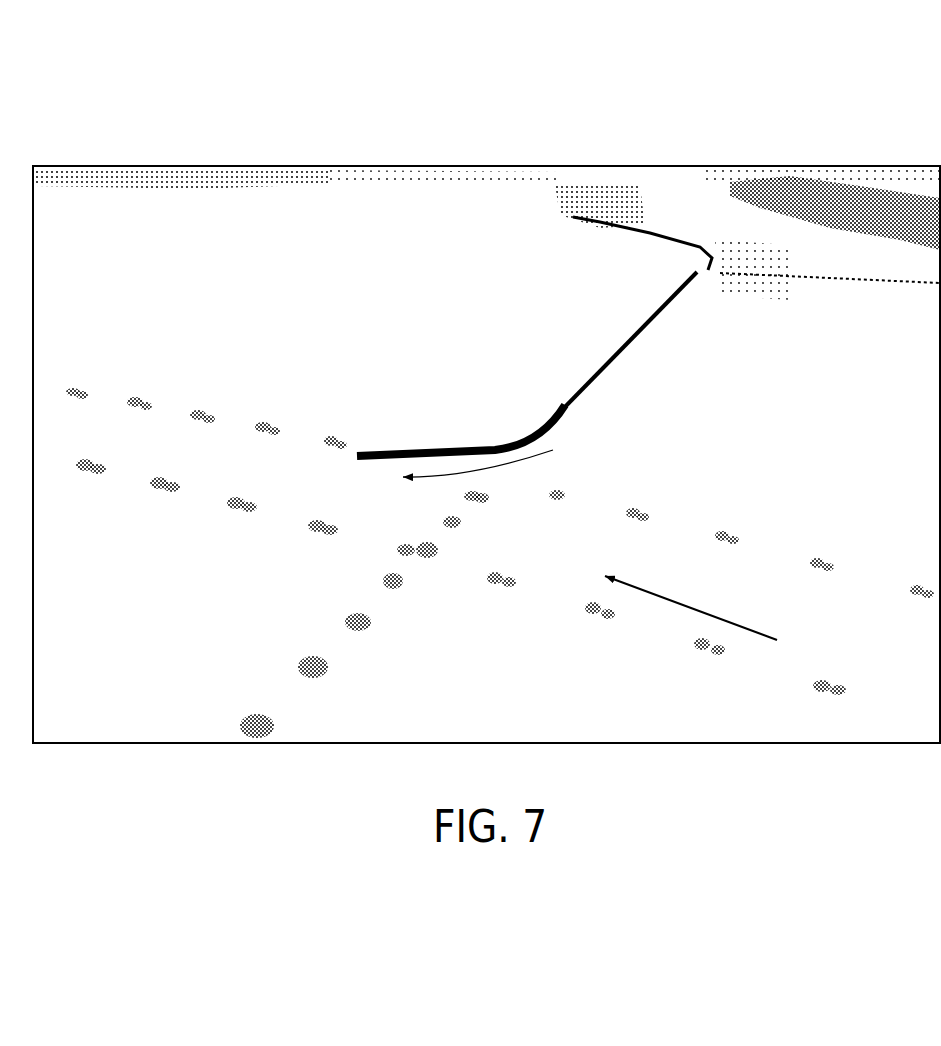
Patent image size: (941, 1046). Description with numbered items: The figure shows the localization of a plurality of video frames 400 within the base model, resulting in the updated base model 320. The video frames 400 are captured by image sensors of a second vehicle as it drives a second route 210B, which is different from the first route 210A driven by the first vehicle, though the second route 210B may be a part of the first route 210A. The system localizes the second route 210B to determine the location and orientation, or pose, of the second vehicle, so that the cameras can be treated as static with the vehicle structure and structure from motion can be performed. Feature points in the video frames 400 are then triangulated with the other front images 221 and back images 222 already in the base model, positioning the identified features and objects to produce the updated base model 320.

The updated base model 320 is at (850, 147).
The plurality of video frames 400 is at (542, 420).
The second route 210B is at (533, 460).
The first route 210A is at (706, 612).
The front images 221 is at (482, 588).
The back images 222 is at (505, 595).